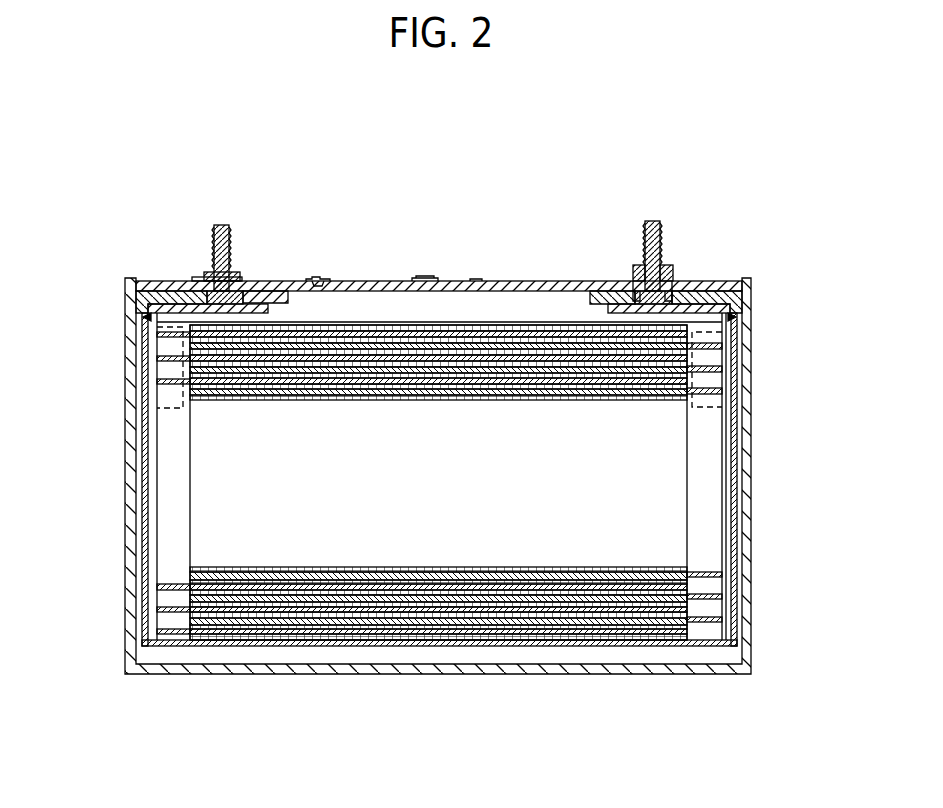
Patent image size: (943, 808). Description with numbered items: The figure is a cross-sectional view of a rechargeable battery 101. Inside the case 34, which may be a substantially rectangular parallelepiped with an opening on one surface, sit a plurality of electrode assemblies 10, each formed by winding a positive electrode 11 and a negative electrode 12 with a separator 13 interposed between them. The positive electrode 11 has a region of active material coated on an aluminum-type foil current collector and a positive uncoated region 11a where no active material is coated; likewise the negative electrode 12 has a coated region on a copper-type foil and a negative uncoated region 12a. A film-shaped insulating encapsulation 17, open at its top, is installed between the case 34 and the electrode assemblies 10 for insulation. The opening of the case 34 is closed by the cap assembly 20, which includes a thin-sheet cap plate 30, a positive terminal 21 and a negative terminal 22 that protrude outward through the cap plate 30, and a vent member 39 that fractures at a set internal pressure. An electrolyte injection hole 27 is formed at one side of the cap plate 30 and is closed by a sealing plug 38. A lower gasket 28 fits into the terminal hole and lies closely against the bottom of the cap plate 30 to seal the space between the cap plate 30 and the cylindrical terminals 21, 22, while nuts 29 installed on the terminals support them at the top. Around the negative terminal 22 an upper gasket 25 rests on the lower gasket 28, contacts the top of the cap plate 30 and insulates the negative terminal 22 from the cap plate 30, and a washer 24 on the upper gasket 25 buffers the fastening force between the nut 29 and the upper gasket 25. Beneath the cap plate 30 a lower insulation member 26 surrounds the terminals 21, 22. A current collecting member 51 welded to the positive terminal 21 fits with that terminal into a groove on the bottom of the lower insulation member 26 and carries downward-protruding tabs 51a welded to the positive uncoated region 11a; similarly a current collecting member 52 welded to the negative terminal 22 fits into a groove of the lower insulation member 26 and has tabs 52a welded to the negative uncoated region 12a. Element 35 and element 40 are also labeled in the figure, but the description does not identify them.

The rechargeable battery 101 is at (456, 149).
The electrode assembly 10 is at (439, 531).
The positive electrode 11 is at (296, 631).
The positive uncoated region 11a is at (185, 636).
The negative electrode 12 is at (330, 623).
The negative uncoated region 12a is at (700, 619).
The separator 13 is at (440, 613).
The insulating encapsulation 17 is at (737, 491).
The cap assembly 20 is at (288, 273).
The positive terminal 21 is at (231, 233).
The negative terminal 22 is at (643, 233).
The washer 24 is at (633, 279).
The upper gasket 25 is at (672, 291).
The lower insulation member 26 is at (150, 299).
The electrolyte injection hole 27 is at (329, 292).
The lower gasket 28 is at (187, 285).
The nut 29 is at (211, 279).
The cap plate 30 is at (490, 280).
The case 34 is at (748, 410).
The washer 35 is at (207, 286).
The sealing plug 38 is at (323, 281).
The vent member 39 is at (437, 280).
The insulating frame 40 is at (732, 551).
The current collecting member 51 is at (143, 317).
The tabs 51a is at (175, 399).
The current collecting member 52 is at (736, 317).
The tabs 52a is at (705, 379).